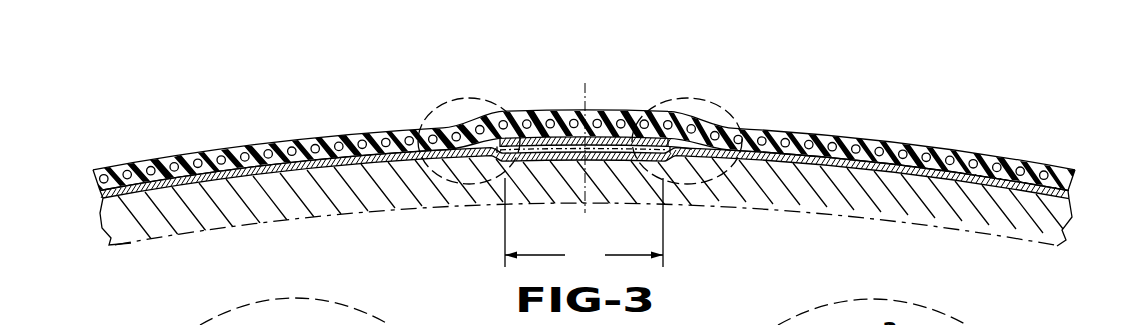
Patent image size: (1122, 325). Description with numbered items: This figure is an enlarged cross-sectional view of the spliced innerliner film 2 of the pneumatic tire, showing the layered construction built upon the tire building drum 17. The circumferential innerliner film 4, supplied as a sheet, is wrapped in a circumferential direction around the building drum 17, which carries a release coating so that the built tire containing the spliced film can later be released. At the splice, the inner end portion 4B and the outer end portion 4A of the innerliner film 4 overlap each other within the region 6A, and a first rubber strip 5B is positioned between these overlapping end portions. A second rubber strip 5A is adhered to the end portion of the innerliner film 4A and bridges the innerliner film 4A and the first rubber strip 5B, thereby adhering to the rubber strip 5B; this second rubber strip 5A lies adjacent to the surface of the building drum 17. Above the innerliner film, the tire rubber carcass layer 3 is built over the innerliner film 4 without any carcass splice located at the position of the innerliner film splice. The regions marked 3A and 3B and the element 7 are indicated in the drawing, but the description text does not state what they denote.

The innerliner film 2 is at (585, 170).
The tire rubber carcass layer 3 is at (363, 141).
The left edge transition region 3A is at (468, 98).
The right edge transition region 3B is at (697, 98).
The circumferential innerliner film 4 is at (326, 180).
The outer end portion 4A is at (680, 160).
The inner end portion 4B is at (497, 152).
The second rubber strip 5A is at (607, 153).
The first rubber strip 5B is at (565, 120).
The overlap region 6A is at (584, 223).
The substrate top surface 7 is at (373, 176).
The tire building drum 17 is at (586, 223).